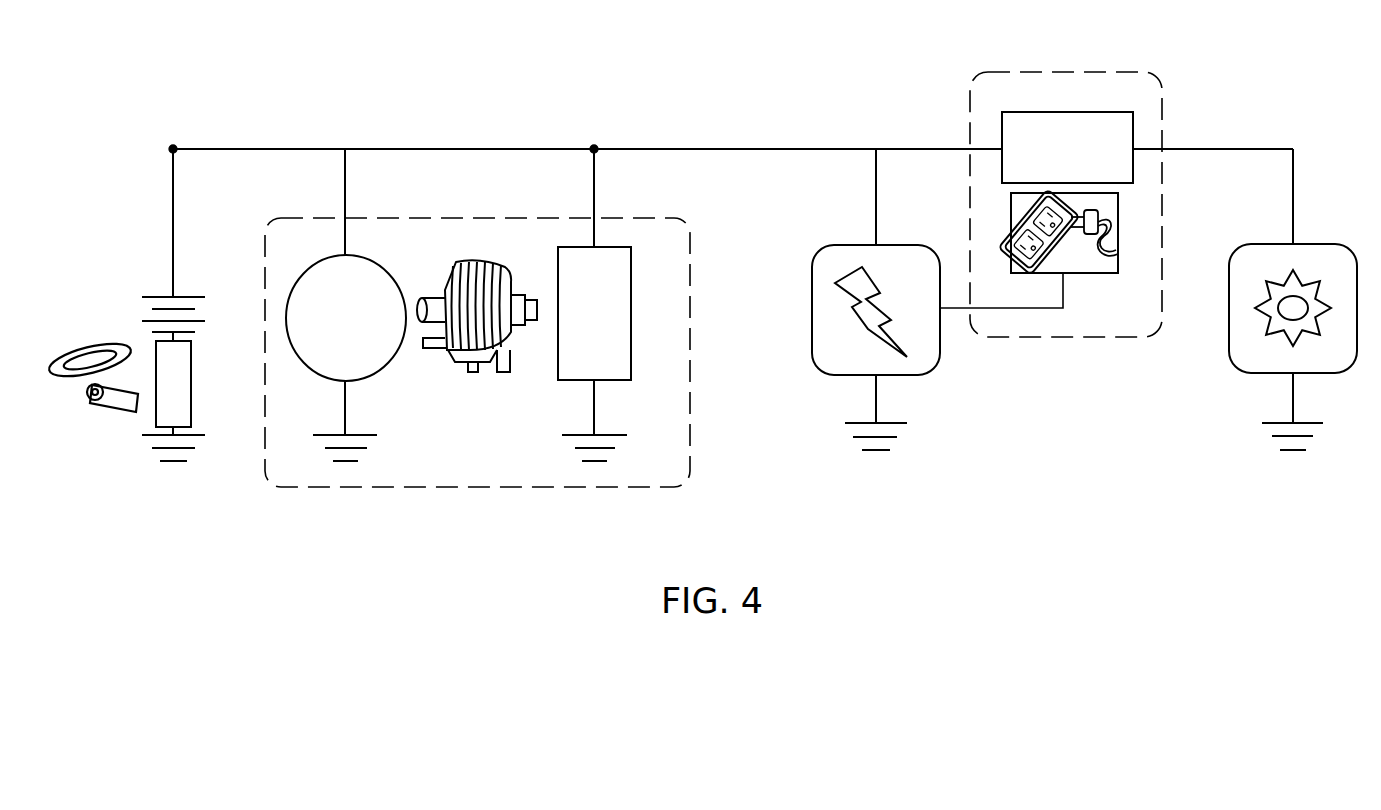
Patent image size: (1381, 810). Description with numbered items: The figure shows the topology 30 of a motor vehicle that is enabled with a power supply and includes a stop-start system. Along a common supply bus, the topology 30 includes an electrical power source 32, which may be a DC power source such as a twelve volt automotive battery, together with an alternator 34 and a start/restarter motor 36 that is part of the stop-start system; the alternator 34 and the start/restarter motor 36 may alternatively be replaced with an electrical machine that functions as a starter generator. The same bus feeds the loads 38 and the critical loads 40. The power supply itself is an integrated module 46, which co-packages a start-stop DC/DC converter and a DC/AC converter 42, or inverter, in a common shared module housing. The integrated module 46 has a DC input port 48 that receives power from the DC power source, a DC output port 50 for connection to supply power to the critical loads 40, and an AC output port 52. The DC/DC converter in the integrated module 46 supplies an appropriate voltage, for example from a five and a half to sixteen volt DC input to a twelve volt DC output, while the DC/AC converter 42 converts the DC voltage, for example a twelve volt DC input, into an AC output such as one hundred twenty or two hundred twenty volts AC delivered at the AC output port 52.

The topology 30 is at (1268, 110).
The electrical power source 32 is at (191, 383).
The alternator 34 is at (388, 367).
The start/restarter motor 36 is at (631, 313).
The loads 38 is at (940, 354).
The critical loads 40 is at (1229, 352).
The DC/AC converter 42 is at (1011, 228).
The integrated module 46 is at (1065, 72).
The DC input port 48 is at (918, 148).
The DC output port 50 is at (1212, 148).
The AC output port 52 is at (1118, 210).